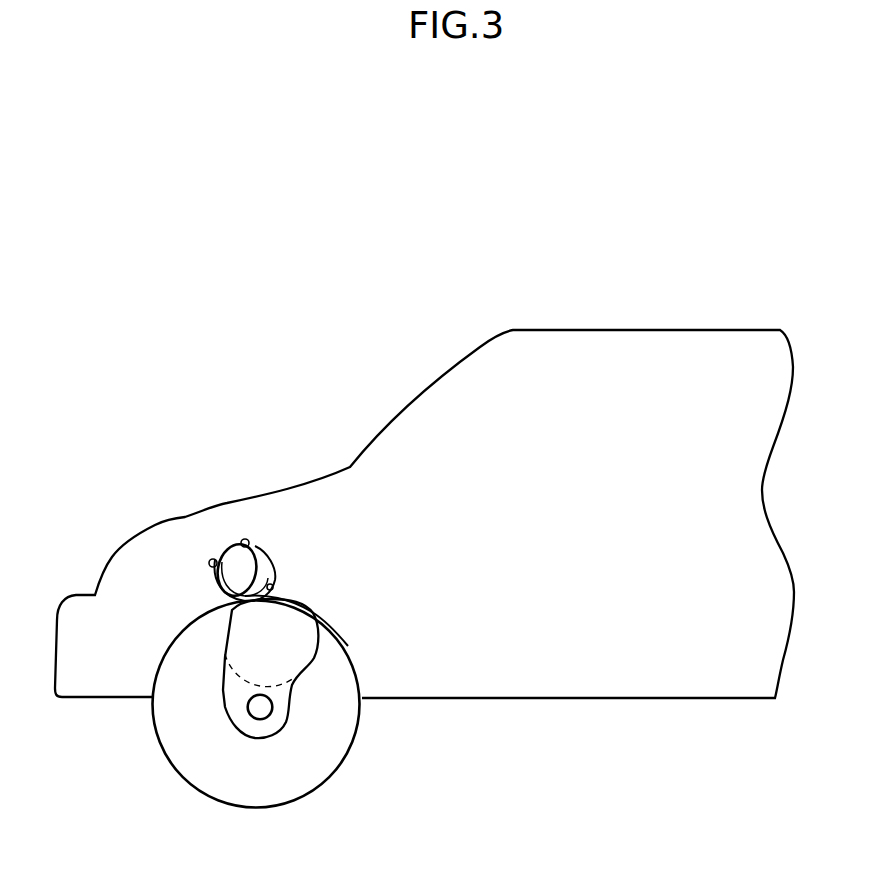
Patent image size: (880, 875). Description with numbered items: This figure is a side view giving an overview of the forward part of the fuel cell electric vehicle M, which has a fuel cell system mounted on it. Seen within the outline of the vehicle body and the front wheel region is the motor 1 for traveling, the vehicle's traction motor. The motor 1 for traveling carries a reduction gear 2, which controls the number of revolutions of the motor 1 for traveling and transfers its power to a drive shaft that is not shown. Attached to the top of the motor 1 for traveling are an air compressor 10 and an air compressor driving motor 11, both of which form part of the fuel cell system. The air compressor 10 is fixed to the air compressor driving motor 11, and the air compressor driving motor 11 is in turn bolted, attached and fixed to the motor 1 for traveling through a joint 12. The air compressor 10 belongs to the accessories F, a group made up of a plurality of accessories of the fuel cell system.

The fuel cell electric vehicle M is at (512, 342).
The motor for traveling 1 is at (286, 658).
The reduction gear 2 is at (273, 723).
The air compressor 10 is at (218, 558).
The air compressor driving motor 11 is at (270, 572).
The joint 12 is at (240, 543).
The accessories F is at (260, 527).